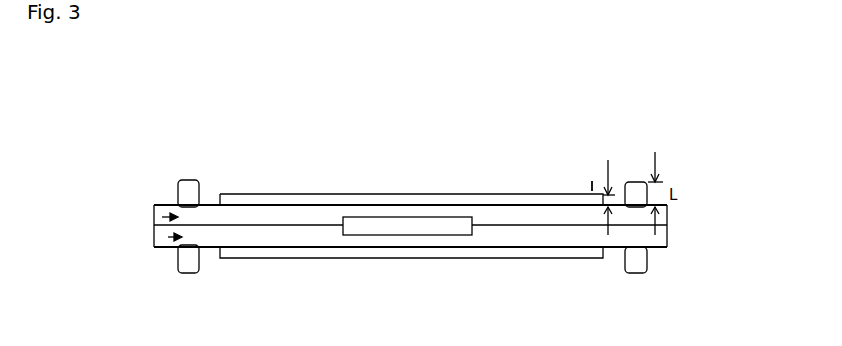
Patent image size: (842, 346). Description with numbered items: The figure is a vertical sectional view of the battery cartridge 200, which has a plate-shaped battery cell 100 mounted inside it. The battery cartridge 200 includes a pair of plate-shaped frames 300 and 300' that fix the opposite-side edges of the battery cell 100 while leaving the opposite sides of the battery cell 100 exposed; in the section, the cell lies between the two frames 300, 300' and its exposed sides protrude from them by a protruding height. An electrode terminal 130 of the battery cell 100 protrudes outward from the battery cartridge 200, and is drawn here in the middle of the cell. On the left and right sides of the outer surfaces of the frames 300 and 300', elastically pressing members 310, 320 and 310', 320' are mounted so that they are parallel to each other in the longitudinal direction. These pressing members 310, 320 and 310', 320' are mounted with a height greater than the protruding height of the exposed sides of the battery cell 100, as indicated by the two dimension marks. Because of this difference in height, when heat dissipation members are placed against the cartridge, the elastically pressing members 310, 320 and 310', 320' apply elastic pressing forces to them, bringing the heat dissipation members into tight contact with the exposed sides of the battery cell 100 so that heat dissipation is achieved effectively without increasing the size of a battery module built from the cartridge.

The battery cartridge 200 is at (55, 45).
The battery cell 100 is at (553, 203).
The electrode terminal 130 is at (410, 223).
The frame 300 is at (367, 227).
The frame 300' is at (368, 258).
The elastically pressing member 310 is at (127, 188).
The elastically pressing member 310' is at (134, 285).
The elastically pressing member 320 is at (660, 153).
The elastically pressing member 320' is at (683, 281).